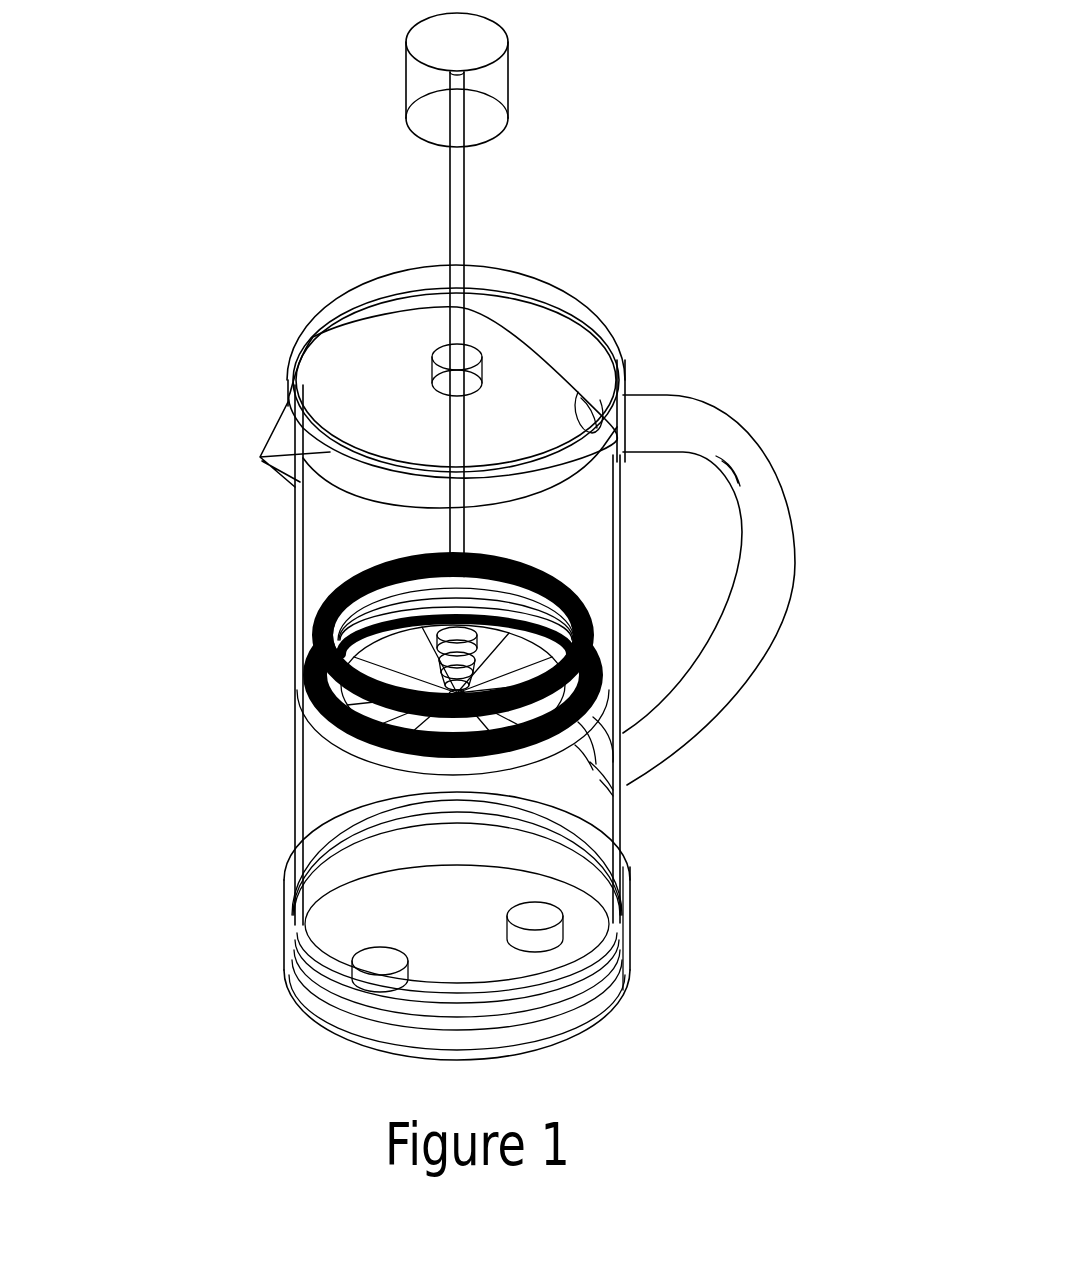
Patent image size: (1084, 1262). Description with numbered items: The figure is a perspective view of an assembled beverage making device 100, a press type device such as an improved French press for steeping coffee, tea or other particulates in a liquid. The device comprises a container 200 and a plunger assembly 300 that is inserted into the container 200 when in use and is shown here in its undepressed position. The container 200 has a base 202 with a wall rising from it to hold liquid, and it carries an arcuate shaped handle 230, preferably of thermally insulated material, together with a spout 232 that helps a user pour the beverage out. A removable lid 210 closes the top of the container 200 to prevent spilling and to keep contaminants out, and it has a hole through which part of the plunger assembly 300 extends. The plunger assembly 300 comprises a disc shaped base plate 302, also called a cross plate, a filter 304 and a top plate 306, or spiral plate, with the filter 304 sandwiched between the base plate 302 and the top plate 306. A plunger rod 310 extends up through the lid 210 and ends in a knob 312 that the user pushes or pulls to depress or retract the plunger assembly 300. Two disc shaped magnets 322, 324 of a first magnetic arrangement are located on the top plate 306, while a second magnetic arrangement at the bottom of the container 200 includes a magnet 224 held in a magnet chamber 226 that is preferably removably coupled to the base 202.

The beverage making device 100 is at (713, 278).
The container 200 is at (290, 773).
The base 202 is at (628, 883).
The lid 210 is at (402, 322).
The magnet 224 is at (563, 922).
The magnet chamber 226 is at (613, 980).
The handle 230 is at (765, 523).
The spout 232 is at (282, 438).
The plunger assembly 300 is at (425, 530).
The base plate 302 is at (308, 692).
The filter 304 is at (480, 685).
The top plate 306 is at (352, 612).
The plunger rod 310 is at (458, 227).
The knob 312 is at (498, 68).
The magnet 322 is at (575, 621).
The magnet 324 is at (350, 665).